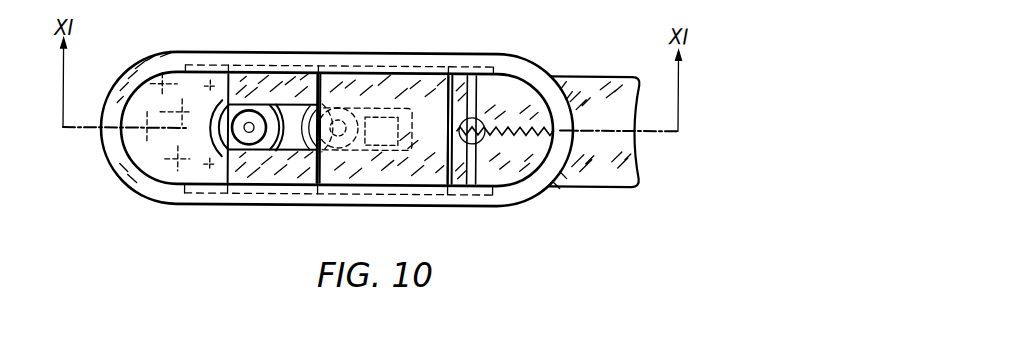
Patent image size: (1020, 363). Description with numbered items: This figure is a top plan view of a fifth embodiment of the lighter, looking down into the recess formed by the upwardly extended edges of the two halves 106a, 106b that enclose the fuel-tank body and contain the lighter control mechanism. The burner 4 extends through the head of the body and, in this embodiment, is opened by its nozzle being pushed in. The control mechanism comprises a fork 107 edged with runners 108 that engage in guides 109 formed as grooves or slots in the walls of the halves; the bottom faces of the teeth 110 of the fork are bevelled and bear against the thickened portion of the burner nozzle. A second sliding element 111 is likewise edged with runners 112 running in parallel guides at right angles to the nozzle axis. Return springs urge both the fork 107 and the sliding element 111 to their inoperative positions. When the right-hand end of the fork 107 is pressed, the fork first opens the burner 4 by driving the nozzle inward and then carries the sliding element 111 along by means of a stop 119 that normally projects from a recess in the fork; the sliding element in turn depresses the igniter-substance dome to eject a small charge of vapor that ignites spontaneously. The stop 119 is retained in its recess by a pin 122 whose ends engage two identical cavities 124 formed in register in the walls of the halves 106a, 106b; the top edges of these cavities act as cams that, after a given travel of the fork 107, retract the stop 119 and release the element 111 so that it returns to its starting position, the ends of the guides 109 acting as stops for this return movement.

The burner 4 is at (204, 143).
The half 106a is at (310, 62).
The half 106b is at (315, 197).
The fork 107 is at (593, 78).
The runners 108 is at (248, 66).
The guides 109 is at (200, 66).
The teeth 110 is at (245, 182).
The second sliding element 111 is at (387, 178).
The runners 112 is at (370, 66).
The stop 119 is at (480, 140).
The pin 122 is at (474, 92).
The cavities 124 is at (455, 66).